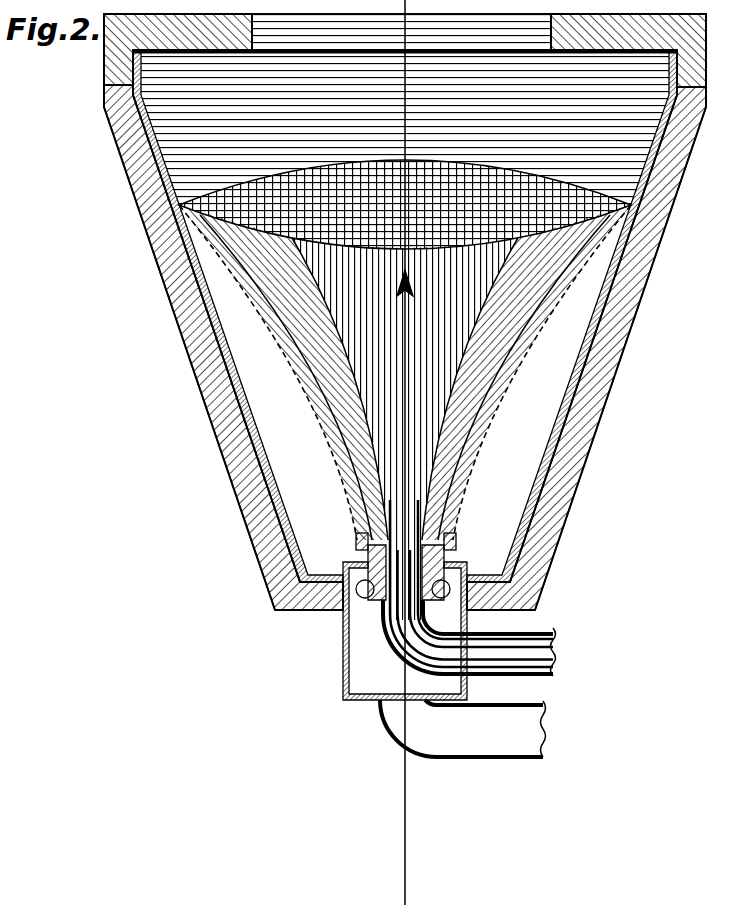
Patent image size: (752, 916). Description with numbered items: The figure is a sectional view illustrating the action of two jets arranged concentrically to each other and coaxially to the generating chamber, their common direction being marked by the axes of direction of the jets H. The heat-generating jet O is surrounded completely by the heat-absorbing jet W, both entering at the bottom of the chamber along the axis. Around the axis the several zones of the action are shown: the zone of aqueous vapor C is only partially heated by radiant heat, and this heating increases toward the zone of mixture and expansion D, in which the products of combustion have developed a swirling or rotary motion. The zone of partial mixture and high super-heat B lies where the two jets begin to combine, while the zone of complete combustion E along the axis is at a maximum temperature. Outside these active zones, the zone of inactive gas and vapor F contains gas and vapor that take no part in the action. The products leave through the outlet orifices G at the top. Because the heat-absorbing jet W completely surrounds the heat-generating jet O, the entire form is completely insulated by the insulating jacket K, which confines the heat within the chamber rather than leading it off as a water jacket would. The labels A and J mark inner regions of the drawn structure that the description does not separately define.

The direction of flow arrow / inner deflecting lip A is at (402, 345).
The zone of partial mixture and high super-heat B is at (405, 204).
The zone of aqueous vapor C is at (405, 372).
The zone of mixture and expansion D is at (405, 129).
The zone of complete combustion E is at (405, 429).
The zone of inactive gas and vapor F is at (405, 372).
The outlet orifices G is at (401, 32).
The axes of direction of the jets H is at (418, 452).
The inner deflector layer J is at (405, 377).
The insulating jacket K is at (206, 341).
The heat-generating jet O is at (515, 657).
The heat-absorbing jet W is at (327, 612).